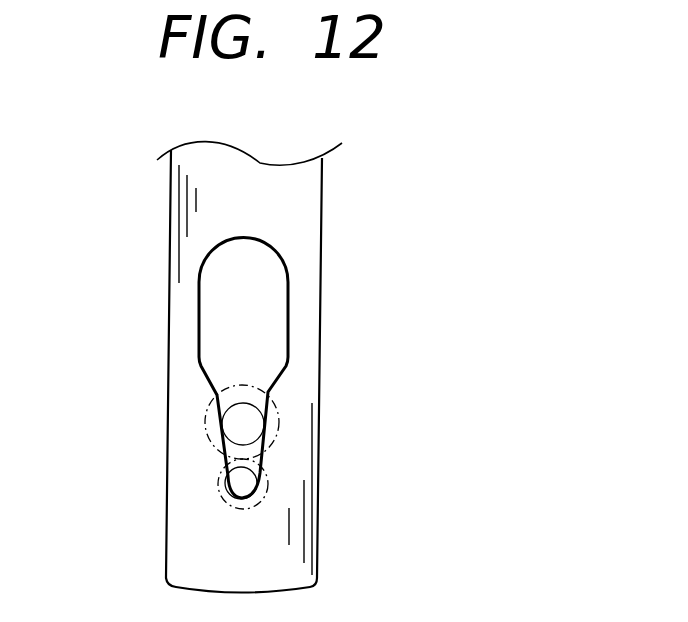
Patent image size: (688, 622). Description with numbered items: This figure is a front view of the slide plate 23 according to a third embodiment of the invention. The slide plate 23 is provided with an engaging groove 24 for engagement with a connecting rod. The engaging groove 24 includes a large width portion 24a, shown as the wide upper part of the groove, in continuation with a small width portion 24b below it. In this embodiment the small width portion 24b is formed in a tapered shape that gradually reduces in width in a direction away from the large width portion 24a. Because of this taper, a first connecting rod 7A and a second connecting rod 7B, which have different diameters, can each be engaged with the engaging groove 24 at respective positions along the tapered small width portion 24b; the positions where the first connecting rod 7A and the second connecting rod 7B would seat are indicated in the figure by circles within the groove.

The slide plate 23 is at (303, 238).
The engaging groove 24 is at (186, 318).
The large width portion 24a is at (283, 345).
The small width portion 24b is at (257, 440).
The first connecting rod 7A is at (205, 422).
The second connecting rod 7B is at (217, 483).